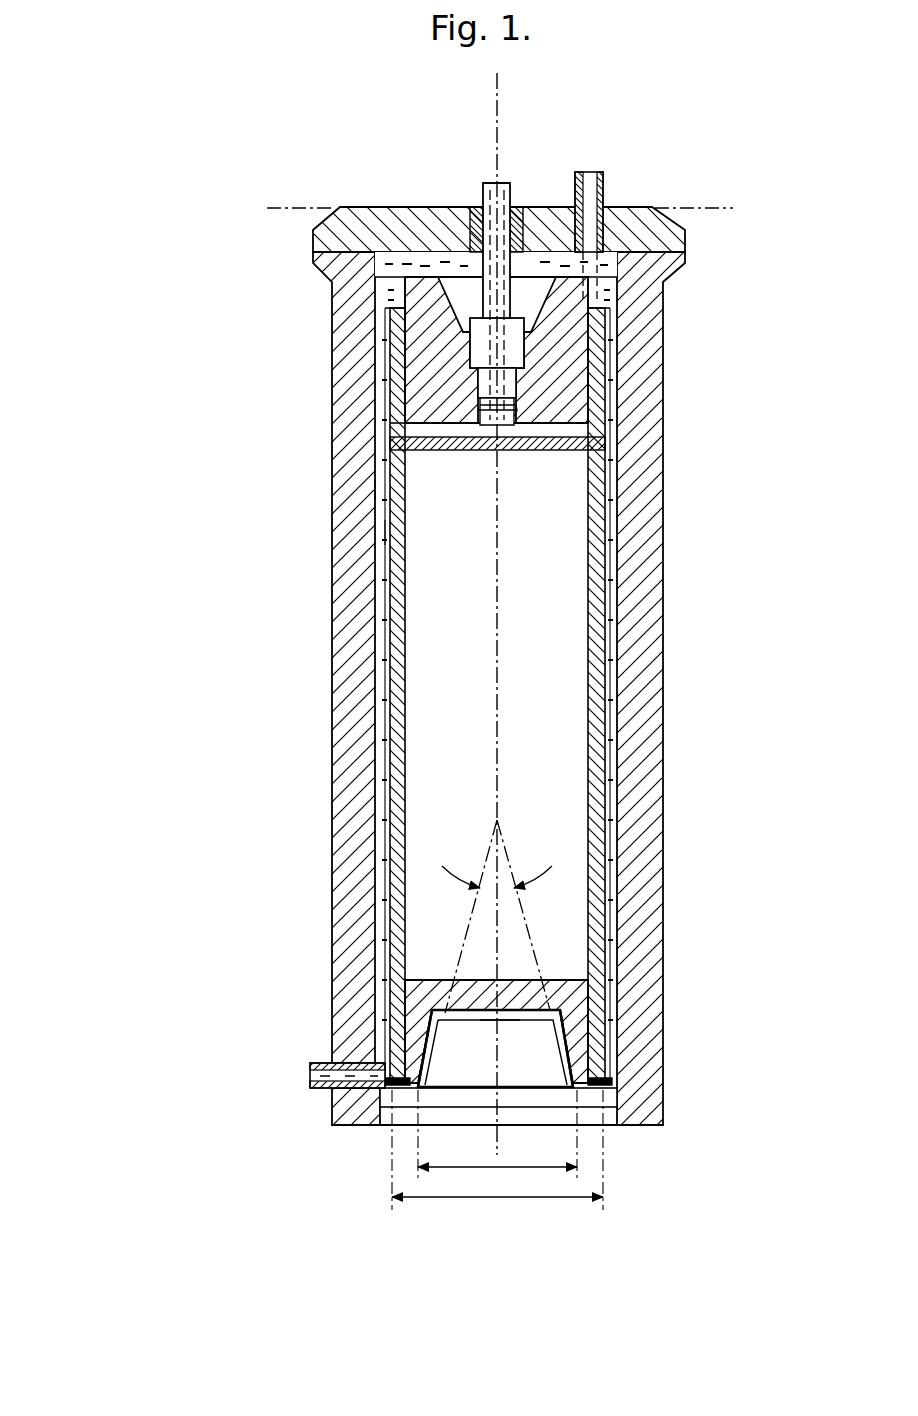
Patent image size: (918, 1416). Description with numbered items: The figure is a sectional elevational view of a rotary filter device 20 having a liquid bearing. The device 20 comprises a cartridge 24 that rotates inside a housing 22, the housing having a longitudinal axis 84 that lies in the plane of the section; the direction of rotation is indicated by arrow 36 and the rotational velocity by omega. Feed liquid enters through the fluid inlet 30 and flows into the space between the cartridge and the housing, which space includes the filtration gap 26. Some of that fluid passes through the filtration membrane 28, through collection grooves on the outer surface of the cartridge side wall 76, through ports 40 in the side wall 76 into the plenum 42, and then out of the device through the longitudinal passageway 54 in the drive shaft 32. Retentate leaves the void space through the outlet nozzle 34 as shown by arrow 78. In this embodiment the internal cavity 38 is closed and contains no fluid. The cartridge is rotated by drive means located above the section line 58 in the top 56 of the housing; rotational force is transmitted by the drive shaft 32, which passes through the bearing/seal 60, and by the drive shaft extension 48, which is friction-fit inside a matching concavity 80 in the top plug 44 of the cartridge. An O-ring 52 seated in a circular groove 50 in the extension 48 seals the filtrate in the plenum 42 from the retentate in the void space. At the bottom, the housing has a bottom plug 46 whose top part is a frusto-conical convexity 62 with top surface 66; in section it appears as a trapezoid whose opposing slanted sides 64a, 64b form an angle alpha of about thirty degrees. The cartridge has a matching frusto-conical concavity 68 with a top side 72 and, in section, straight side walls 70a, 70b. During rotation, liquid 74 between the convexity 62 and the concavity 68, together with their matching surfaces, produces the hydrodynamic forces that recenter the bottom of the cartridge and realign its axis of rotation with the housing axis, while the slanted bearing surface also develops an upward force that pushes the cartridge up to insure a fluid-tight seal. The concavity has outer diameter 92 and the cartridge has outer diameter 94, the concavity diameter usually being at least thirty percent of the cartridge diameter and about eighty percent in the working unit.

The device 20 is at (268, 605).
The housing 22 is at (337, 723).
The cartridge 24 is at (374, 490).
The filtration gap 26 is at (380, 820).
The filtration membrane 28 is at (388, 532).
The fluid inlet 30 is at (322, 1089).
The drive shaft 32 is at (526, 190).
The outlet nozzle 34 is at (594, 186).
The arrow 36 is at (483, 188).
The internal cavity 38 is at (510, 677).
The ports 40 is at (393, 434).
The plenum 42 is at (560, 437).
The top plug 44 is at (405, 288).
The bottom plug 46 is at (440, 1115).
The drive shaft extension 48 is at (480, 388).
The circular groove 50 is at (482, 425).
The O-ring 52 is at (528, 408).
The longitudinal passageway 54 is at (499, 300).
The top 56 is at (322, 236).
The section line 58 is at (310, 207).
The bearing/seal 60 is at (473, 223).
The convexity 62 is at (483, 1065).
The slanted side 64a is at (410, 1070).
The slanted side 64b is at (587, 1062).
The top surface 66 is at (540, 1022).
The concavity 68 is at (420, 1031).
The straight side wall 70a is at (420, 1050).
The straight side wall 70b is at (573, 1043).
The top side 72 is at (477, 1008).
The liquid 74 is at (490, 1013).
The cartridge side wall 76 is at (397, 585).
The arrow 78 is at (589, 240).
The concavity 80 is at (492, 382).
The longitudinal axis 84 is at (498, 88).
The outer diameter 92 is at (472, 1166).
The outer diameter 94 is at (486, 1198).